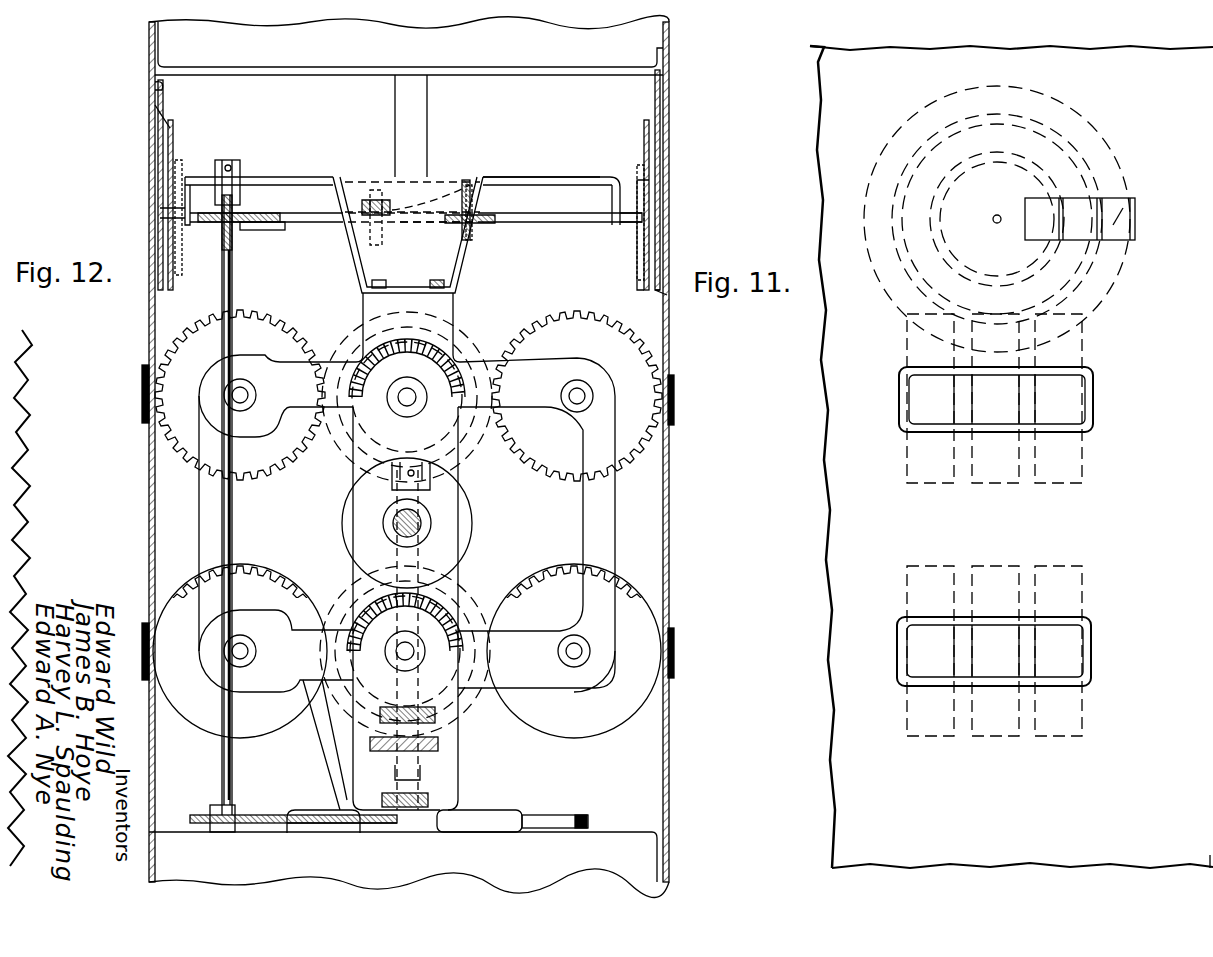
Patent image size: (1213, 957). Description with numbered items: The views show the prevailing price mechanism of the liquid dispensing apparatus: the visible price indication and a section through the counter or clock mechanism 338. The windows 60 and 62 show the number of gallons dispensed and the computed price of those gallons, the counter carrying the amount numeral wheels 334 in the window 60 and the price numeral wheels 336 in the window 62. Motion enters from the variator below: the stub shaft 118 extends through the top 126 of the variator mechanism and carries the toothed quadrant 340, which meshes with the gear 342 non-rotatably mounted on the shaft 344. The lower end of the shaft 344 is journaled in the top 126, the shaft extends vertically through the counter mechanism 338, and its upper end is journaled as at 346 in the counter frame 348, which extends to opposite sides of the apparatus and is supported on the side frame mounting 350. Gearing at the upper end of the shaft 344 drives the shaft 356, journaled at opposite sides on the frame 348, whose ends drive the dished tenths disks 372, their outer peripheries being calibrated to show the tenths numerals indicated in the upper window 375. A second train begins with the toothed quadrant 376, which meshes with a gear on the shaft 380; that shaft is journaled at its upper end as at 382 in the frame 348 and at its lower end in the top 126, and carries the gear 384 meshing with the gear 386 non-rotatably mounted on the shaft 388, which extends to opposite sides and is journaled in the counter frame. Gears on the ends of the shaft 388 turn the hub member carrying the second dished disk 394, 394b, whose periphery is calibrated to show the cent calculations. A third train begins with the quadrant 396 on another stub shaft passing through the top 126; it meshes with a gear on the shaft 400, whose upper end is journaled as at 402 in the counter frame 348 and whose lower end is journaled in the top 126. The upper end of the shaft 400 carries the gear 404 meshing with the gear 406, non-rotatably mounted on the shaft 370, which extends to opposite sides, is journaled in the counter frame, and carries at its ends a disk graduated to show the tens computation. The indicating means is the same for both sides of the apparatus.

In FIG. 12, the dished tenths disks 372 is at (149, 88).
In FIG. 11, the dished tenths disks 372 is at (1135, 205).
In FIG. 12, the second dished disk 394 is at (158, 132).
In FIG. 11, the second dished disk 394 is at (1072, 216).
In FIG. 12, the toothed quadrant 376 is at (160, 200).
In FIG. 12, the shaft 400 is at (160, 232).
In FIG. 11, the shaft 400 is at (1040, 224).
In FIG. 12, the upper window 375 is at (668, 200).
In FIG. 11, the upper window 375 is at (1108, 214).
In FIG. 12, the journal 346 is at (230, 186).
In FIG. 12, the counter frame 348 is at (292, 177).
In FIG. 12, the gear 386 is at (378, 198).
In FIG. 12, the journal 382 is at (402, 214).
In FIG. 12, the gear 384 is at (420, 218).
In FIG. 12, the shaft 388 is at (476, 214).
In FIG. 12, the journal 402 is at (522, 184).
In FIG. 12, the gear 404 is at (498, 218).
In FIG. 12, the gear 406 is at (474, 241).
In FIG. 12, the shaft 370 is at (563, 224).
In FIG. 12, the side frame mounting 350 is at (462, 302).
In FIG. 12, the shaft 356 is at (263, 226).
In FIG. 12, the shaft 380 is at (352, 250).
In FIG. 12, the price numeral wheels 336 is at (170, 356).
In FIG. 11, the price numeral wheels 336 is at (1057, 388).
In FIG. 12, the window 62 is at (147, 370).
In FIG. 11, the window 62 is at (1075, 394).
In FIG. 12, the counter or clock mechanism 338 is at (610, 522).
In FIG. 12, the amount numeral wheels 334 is at (652, 592).
In FIG. 11, the amount numeral wheels 334 is at (1052, 640).
In FIG. 12, the lower gear 394b is at (258, 574).
In FIG. 12, the window 60 is at (188, 602).
In FIG. 11, the window 60 is at (1065, 648).
In FIG. 12, the shaft 344 is at (222, 746).
In FIG. 12, the gear 342 is at (198, 815).
In FIG. 12, the stub shaft 118 is at (346, 800).
In FIG. 12, the toothed quadrant 340 is at (290, 824).
In FIG. 12, the quadrant 396 is at (532, 818).
In FIG. 12, the top 126 is at (620, 834).